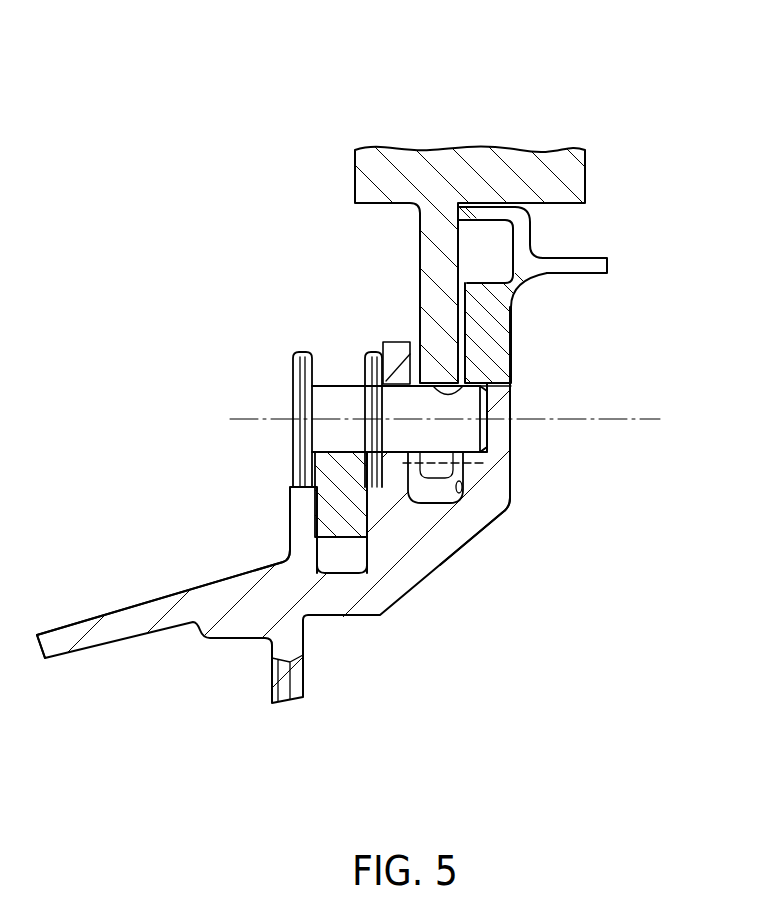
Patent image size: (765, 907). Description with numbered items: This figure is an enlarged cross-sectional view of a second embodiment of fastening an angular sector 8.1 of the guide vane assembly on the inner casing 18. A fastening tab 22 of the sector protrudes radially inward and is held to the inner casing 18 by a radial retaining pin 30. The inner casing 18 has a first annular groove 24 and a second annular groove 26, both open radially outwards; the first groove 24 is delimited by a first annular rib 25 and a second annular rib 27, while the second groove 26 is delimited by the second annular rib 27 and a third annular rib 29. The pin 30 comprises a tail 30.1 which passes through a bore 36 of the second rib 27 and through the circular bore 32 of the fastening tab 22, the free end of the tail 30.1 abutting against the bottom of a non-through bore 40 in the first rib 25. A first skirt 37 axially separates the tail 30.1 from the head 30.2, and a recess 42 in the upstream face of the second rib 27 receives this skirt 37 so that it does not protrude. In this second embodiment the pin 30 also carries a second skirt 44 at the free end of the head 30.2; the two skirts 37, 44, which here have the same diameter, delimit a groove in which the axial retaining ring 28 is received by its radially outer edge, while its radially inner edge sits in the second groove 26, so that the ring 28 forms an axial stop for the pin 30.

The angular sector 8.1 is at (578, 138).
The inner casing 18 is at (387, 508).
The fastening tab 22 is at (440, 245).
The first annular groove 24 is at (508, 505).
The first annular rib 25 is at (487, 327).
The second annular groove 26 is at (333, 578).
The second annular rib 27 is at (388, 350).
The axial retaining ring 28 is at (328, 505).
The third annular rib 29 is at (297, 553).
The radial retaining pin 30 is at (396, 365).
The tail 30.1 is at (467, 410).
The head 30.2 is at (330, 397).
The through bore 32 is at (493, 380).
The bore 36 is at (422, 473).
The skirt 37 is at (376, 352).
The non-through bore 40 is at (480, 448).
The recess 42 is at (370, 473).
The second skirt 44 is at (303, 438).